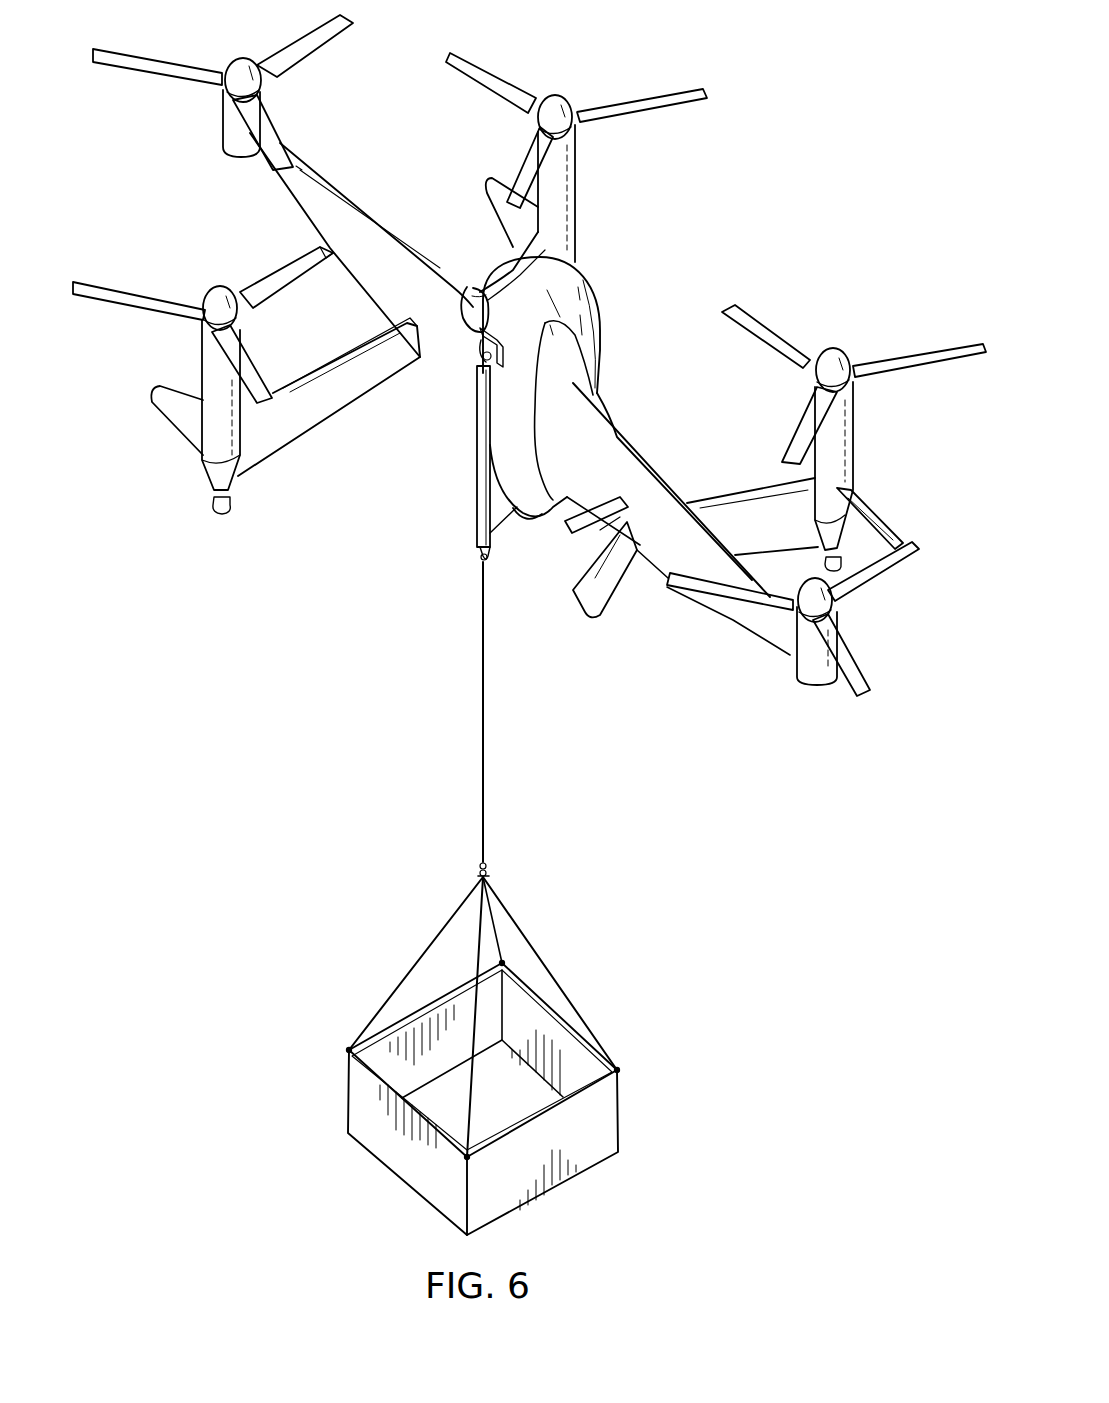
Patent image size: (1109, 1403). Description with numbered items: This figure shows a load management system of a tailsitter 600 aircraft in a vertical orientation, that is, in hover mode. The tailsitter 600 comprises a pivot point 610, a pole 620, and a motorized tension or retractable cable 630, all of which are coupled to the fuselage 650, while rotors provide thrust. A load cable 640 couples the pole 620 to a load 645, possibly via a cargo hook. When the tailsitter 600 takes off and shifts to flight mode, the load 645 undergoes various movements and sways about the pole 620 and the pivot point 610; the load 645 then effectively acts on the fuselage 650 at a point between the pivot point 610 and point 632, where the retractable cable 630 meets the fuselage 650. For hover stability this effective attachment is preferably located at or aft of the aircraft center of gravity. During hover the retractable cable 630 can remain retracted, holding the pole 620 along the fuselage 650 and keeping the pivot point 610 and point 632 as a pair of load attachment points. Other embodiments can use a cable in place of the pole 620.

The tailsitter 600 is at (814, 86).
The pivot point 610 is at (468, 290).
The pole 620 is at (477, 472).
The retractable cable 630 is at (483, 516).
The point where the retractable cable meets the fuselage 632 is at (541, 520).
The load cable 640 is at (483, 713).
The load 645 is at (410, 1170).
The fuselage 650 is at (600, 347).